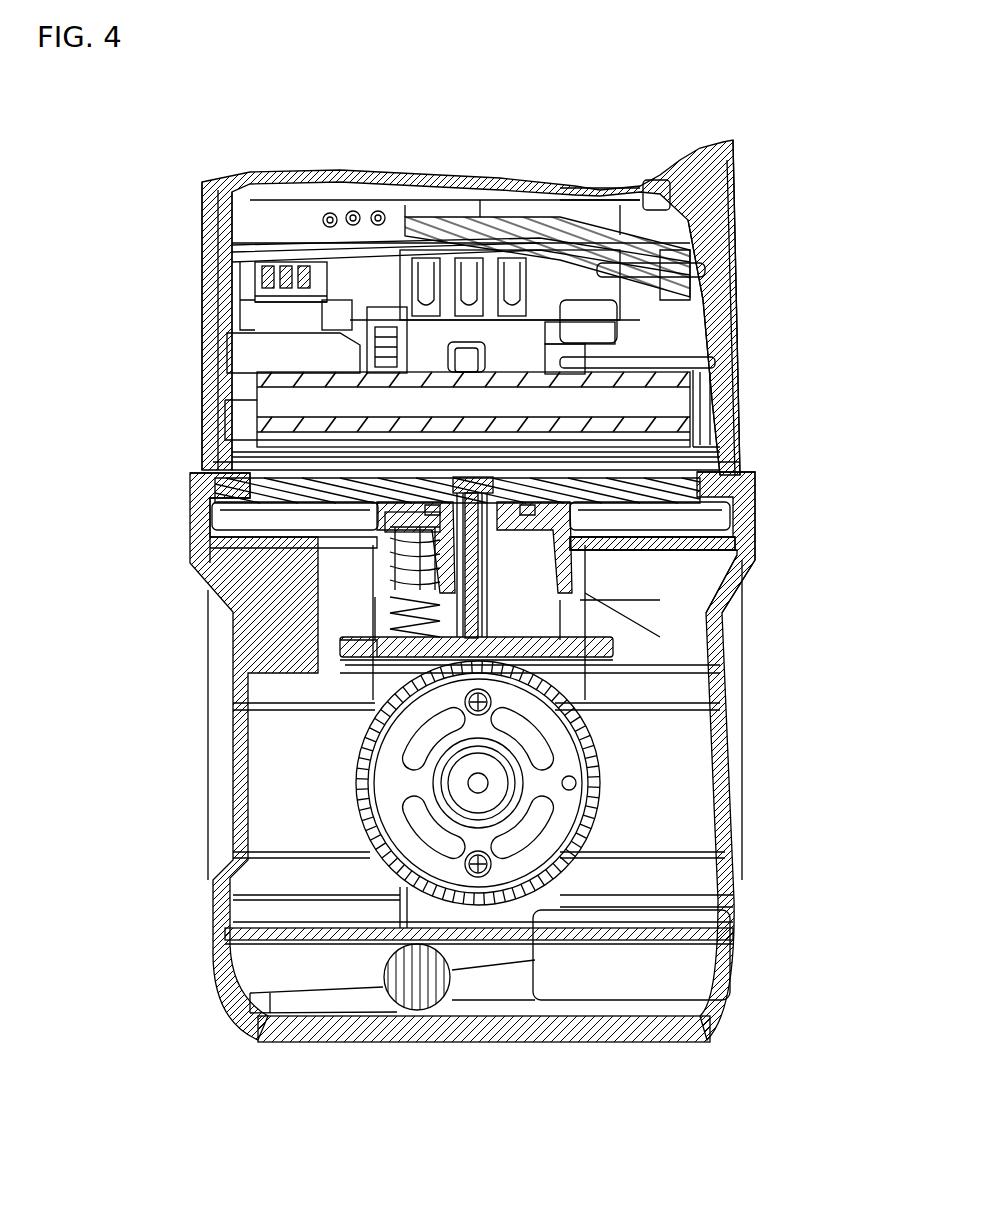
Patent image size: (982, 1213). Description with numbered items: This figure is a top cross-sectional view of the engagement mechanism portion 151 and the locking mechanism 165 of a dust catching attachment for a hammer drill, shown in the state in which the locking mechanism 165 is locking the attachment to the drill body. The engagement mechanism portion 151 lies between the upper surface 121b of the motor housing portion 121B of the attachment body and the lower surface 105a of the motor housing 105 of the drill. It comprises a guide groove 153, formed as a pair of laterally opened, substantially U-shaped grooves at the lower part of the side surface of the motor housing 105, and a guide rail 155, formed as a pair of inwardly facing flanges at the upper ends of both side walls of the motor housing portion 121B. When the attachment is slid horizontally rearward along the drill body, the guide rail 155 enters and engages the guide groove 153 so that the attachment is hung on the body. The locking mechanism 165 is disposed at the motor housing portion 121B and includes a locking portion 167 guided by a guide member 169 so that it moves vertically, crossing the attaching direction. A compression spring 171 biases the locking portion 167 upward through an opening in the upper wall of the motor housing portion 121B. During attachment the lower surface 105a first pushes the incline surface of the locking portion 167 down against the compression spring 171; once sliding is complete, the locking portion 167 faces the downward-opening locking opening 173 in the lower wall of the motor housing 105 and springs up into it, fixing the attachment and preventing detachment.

The motor housing 105 is at (207, 300).
The lower surface of the motor housing 105a is at (645, 532).
The motor housing portion 121B is at (720, 775).
The upper surface of the motor housing portion 121b is at (735, 522).
The engagement mechanism portion 151 is at (192, 494).
The guide groove 153 is at (200, 500).
The guide rail 155 is at (195, 478).
The locking mechanism 165 is at (578, 595).
The locking portion 167 is at (370, 520).
The guide member 169 is at (440, 615).
The compression spring 171 is at (320, 580).
The locking opening 173 is at (432, 512).